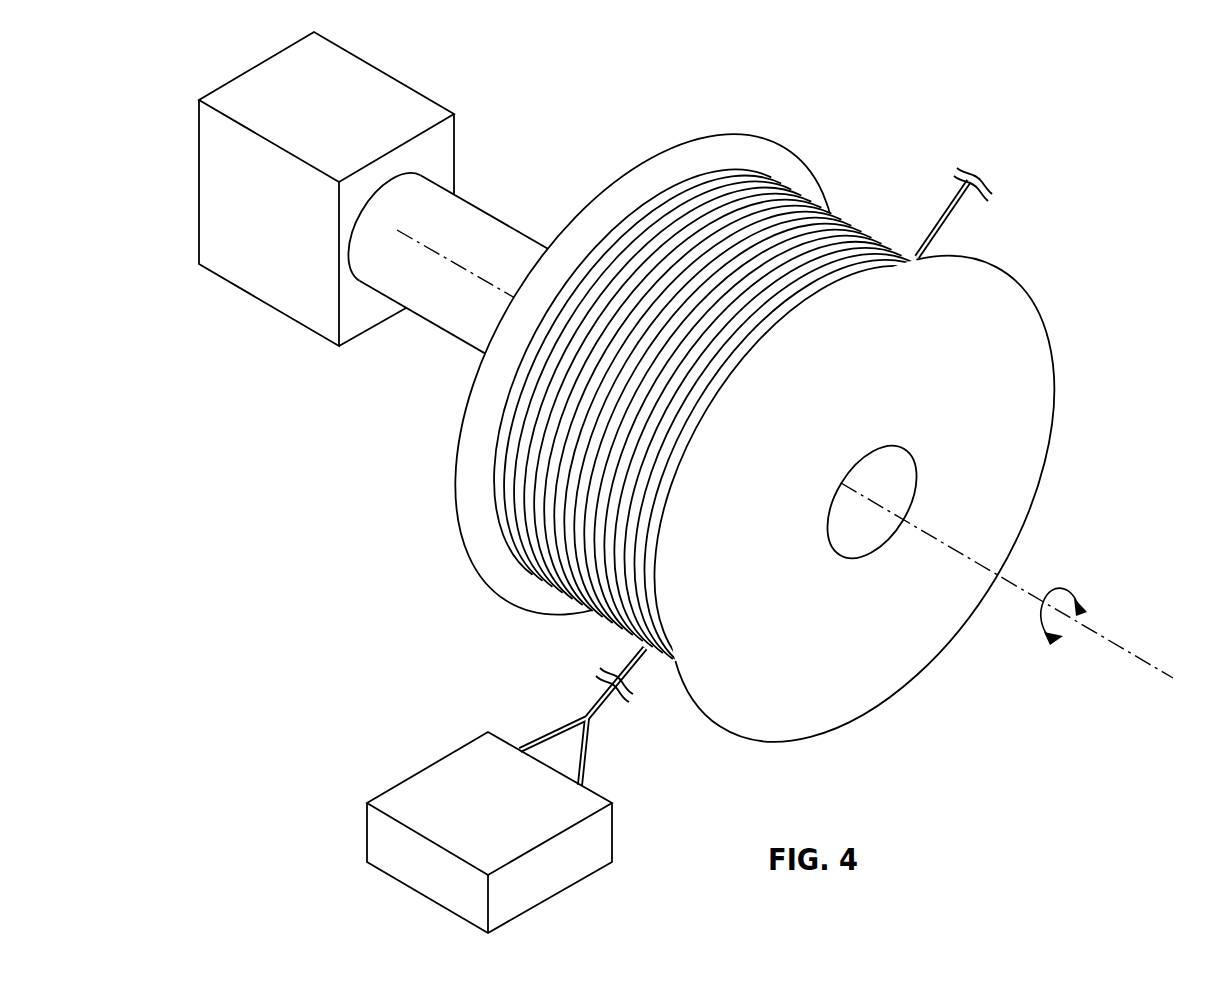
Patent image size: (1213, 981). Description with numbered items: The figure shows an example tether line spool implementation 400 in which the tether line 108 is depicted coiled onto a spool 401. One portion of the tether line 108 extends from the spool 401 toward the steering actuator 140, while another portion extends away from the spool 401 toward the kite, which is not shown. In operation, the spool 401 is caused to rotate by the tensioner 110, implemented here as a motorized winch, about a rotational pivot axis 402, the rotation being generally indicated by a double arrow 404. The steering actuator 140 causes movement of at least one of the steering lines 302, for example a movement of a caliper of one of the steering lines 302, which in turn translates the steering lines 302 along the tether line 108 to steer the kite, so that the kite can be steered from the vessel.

The tensioner 110 is at (246, 52).
The tether line spool implementation 400 is at (656, 129).
The tether line 108 is at (972, 203).
The spool 401 is at (1027, 385).
The axis 402 is at (1138, 655).
The double arrow 404 is at (1067, 588).
The steering lines 302 is at (540, 737).
The steering actuator 140 is at (405, 758).